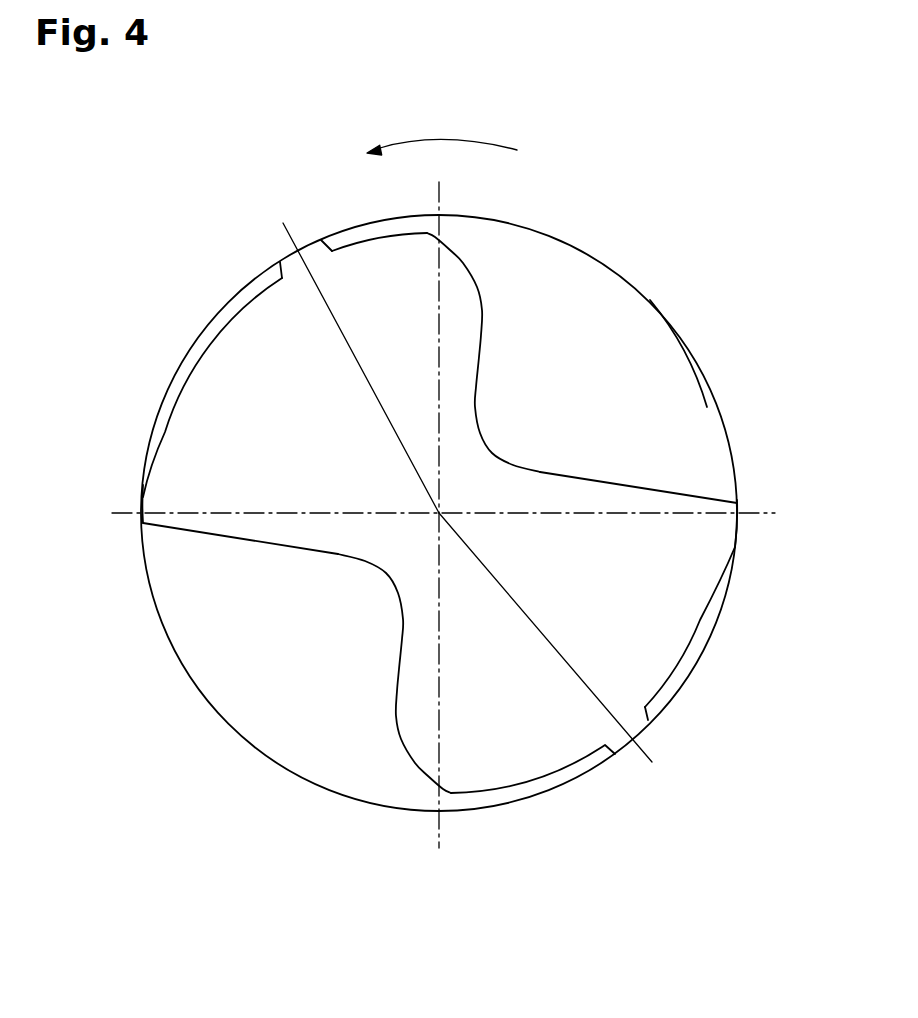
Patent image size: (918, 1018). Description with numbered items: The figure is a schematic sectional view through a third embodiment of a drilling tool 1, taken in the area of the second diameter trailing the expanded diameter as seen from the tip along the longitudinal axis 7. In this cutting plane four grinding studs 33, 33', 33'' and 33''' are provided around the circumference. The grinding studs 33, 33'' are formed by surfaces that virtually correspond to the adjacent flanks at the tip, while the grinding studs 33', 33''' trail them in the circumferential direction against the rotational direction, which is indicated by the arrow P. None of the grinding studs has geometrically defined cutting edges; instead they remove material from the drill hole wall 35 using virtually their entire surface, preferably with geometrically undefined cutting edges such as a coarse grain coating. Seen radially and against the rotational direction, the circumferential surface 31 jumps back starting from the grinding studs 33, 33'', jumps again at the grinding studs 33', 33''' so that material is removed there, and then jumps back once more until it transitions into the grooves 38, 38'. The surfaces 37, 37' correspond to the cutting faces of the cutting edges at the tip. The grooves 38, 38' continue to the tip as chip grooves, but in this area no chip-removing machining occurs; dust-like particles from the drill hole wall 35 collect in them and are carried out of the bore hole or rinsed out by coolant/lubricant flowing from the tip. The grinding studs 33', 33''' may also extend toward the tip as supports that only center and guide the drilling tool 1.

The drilling tool 1 is at (683, 148).
The longitudinal axis 7 is at (439, 513).
The circumferential surface 31 is at (698, 617).
The grinding stud 33 is at (785, 523).
The grinding stud 33' is at (291, 337).
The grinding stud 33'' is at (100, 500).
The grinding stud 33''' is at (580, 668).
The drill hole wall 35 is at (707, 407).
The surface 37 is at (683, 471).
The surface 37' is at (203, 572).
The groove 38 is at (573, 350).
The groove 38' is at (314, 682).
The arrow P is at (445, 142).